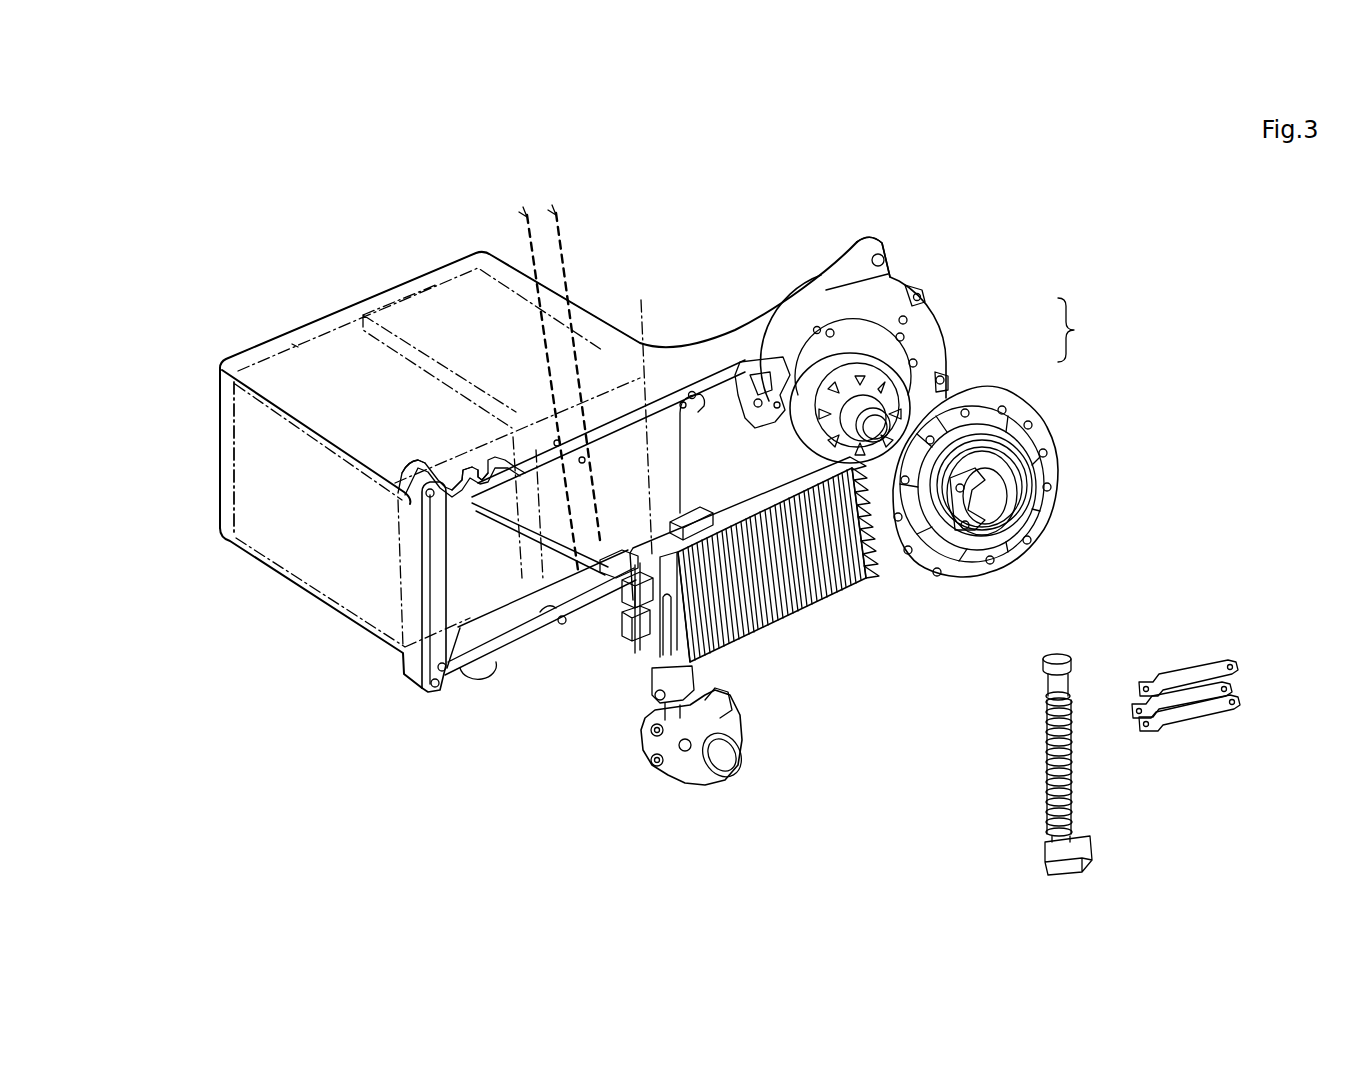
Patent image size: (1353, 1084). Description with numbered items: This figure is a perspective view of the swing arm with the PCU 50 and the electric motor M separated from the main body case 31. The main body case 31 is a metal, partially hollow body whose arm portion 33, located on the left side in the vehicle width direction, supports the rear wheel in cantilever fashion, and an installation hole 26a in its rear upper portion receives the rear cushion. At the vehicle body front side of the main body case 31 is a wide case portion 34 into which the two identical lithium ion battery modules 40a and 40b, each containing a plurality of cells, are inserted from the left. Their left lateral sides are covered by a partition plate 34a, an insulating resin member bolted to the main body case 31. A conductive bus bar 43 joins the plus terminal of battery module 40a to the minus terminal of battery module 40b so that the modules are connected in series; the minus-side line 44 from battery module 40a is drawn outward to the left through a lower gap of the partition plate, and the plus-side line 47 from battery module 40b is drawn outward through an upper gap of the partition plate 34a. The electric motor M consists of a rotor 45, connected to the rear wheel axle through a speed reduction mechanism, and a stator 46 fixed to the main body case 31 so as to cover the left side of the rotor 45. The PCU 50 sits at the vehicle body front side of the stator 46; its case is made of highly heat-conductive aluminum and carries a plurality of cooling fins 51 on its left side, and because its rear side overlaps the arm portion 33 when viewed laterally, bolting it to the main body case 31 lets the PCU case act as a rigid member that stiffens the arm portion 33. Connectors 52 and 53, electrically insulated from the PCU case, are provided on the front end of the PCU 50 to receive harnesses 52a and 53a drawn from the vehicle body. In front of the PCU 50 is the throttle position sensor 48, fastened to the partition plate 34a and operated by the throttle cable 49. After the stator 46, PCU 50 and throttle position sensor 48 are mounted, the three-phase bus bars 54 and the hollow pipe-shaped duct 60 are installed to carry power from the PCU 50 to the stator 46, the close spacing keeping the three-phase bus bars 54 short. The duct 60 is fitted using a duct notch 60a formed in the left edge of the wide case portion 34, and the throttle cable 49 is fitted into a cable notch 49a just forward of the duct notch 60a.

The installation hole 26a is at (890, 252).
The main body case 31 is at (599, 315).
The arm portion 33 is at (727, 353).
The wide case portion 34 is at (282, 478).
The partition plate 34a is at (445, 555).
The battery module 40a is at (296, 345).
The battery module 40b is at (440, 284).
The bus bar 43 is at (502, 525).
The minus-side line 44 is at (538, 590).
The rotor 45 is at (883, 373).
The stator 46 is at (980, 398).
The plus-side line 47 is at (641, 300).
The throttle position sensor 48 is at (687, 785).
The throttle cable 49 is at (737, 645).
The cable notch 49a is at (460, 455).
The PCU 50 is at (798, 622).
The cooling fins 51 is at (783, 592).
The connector 52 is at (620, 628).
The harness 52a is at (582, 420).
The connector 53 is at (624, 642).
The harness 53a is at (552, 427).
The three-phase bus bars 54 is at (1222, 732).
The duct 60 is at (1045, 748).
The duct notch 60a is at (483, 446).
The electric motor M is at (1081, 330).